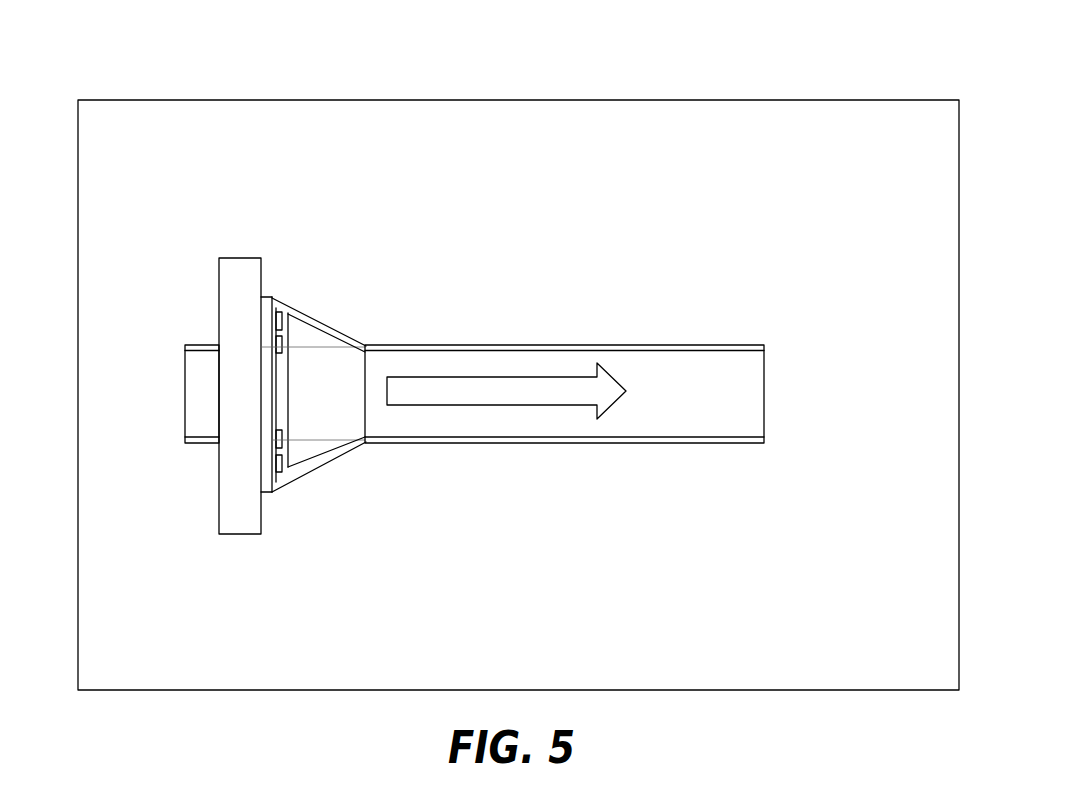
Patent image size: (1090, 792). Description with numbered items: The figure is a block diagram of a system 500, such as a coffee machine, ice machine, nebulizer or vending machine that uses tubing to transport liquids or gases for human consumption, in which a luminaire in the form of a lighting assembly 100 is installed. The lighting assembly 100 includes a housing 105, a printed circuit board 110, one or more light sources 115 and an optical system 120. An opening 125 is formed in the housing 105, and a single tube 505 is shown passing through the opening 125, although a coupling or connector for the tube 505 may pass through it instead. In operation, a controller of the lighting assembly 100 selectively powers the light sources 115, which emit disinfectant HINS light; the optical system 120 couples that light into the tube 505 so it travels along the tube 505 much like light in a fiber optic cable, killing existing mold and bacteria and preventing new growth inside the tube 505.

The system 500 is at (93, 98).
The lighting assembly 100 is at (261, 353).
The housing 105 is at (218, 275).
The printed circuit board 110 is at (268, 302).
The light sources 115 is at (284, 462).
The optical system 120 is at (348, 343).
The opening 125 is at (383, 402).
The tube 505 is at (613, 346).